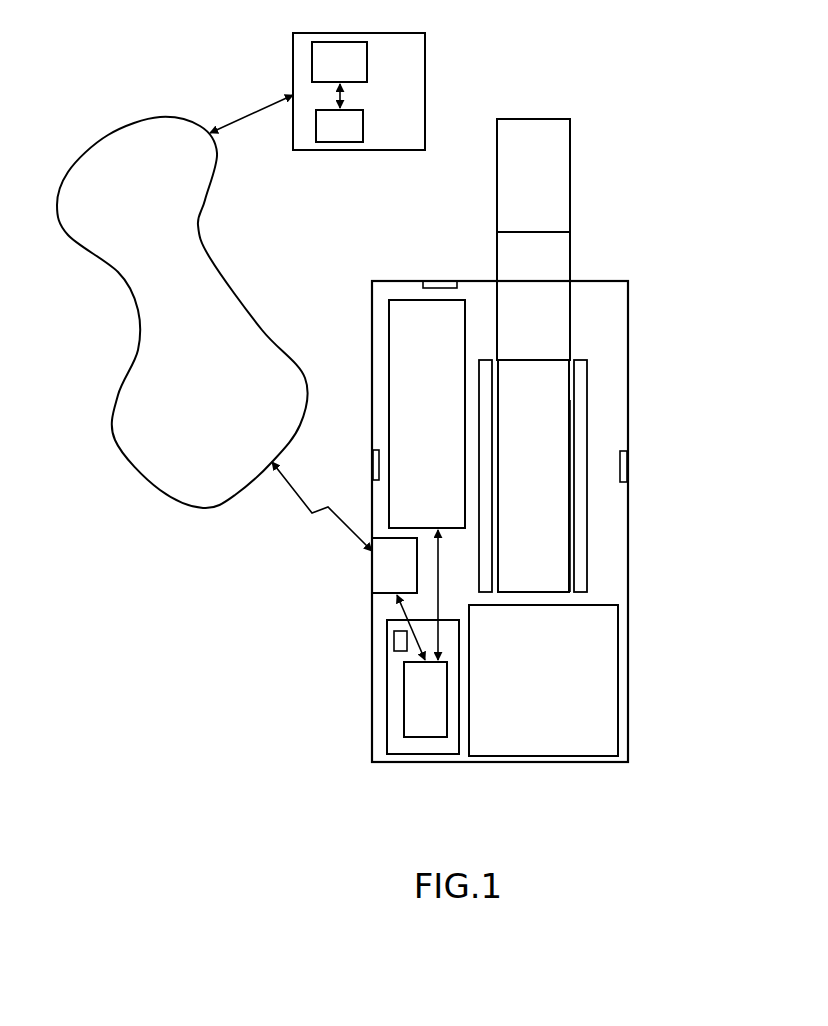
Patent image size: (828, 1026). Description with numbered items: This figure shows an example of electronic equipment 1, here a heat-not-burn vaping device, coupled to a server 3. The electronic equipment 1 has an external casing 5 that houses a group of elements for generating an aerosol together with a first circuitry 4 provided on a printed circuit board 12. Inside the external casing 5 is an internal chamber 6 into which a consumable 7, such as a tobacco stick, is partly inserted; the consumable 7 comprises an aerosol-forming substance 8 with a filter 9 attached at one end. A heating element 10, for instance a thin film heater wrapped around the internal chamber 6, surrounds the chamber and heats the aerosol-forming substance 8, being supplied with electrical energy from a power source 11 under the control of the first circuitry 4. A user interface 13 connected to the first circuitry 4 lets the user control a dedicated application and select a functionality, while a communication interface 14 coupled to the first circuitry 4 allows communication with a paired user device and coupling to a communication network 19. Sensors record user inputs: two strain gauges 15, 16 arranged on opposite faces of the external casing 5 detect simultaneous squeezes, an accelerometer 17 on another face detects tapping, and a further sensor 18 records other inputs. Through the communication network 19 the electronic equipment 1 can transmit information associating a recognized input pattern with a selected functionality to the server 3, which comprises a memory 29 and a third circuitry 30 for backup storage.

The electronic equipment 1 is at (392, 268).
The server 3 is at (425, 100).
The first circuitry 4 is at (425, 737).
The external casing 5 is at (628, 727).
The internal chamber 6 is at (570, 535).
The consumable 7 is at (572, 232).
The aerosol-forming substance 8 is at (545, 398).
The filter 9 is at (564, 176).
The heating element 10 is at (582, 425).
The power source 11 is at (614, 670).
The printed circuit board 12 is at (387, 730).
The user interface 13 is at (389, 355).
The communication interface 14 is at (385, 593).
The strain gauge 15 is at (373, 468).
The strain gauge 16 is at (628, 458).
The accelerometer 17 is at (437, 283).
The sensor 18 is at (394, 644).
The communication network 19 is at (193, 370).
The memory 29 is at (327, 142).
The third circuitry 30 is at (312, 62).